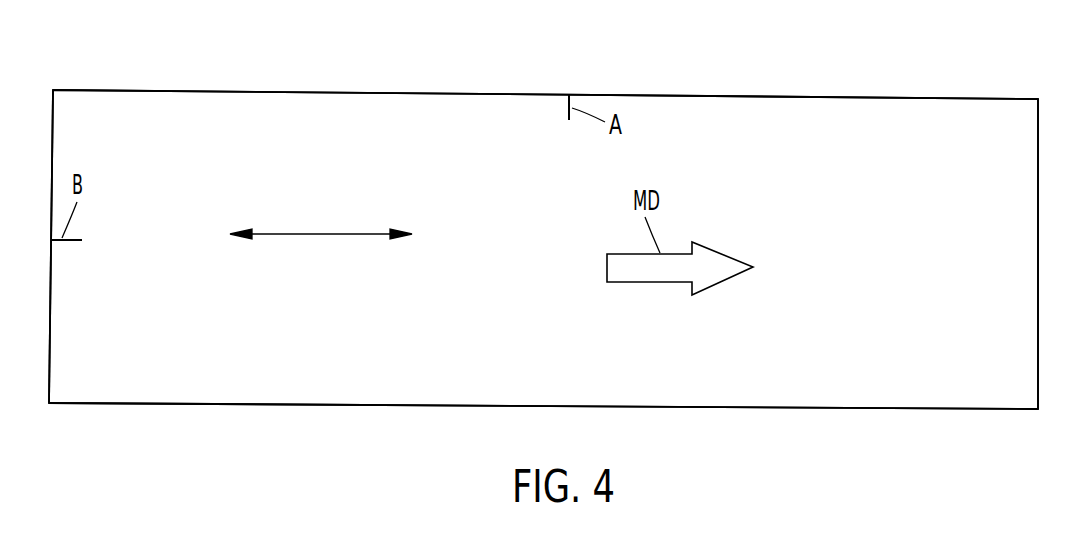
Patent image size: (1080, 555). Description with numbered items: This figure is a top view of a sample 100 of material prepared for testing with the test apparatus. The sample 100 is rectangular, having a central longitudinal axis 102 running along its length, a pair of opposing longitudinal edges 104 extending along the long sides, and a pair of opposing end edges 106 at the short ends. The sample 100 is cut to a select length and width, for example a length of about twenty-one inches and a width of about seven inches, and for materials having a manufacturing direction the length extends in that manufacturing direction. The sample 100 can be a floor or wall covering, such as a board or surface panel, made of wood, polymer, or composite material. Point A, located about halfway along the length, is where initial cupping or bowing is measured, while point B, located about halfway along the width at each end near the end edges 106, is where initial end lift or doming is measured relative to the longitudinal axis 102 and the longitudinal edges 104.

The sample 100 is at (230, 122).
The central longitudinal axis 102 is at (323, 232).
The opposing longitudinal edges 104 is at (482, 93).
The opposing end edges 106 is at (53, 277).